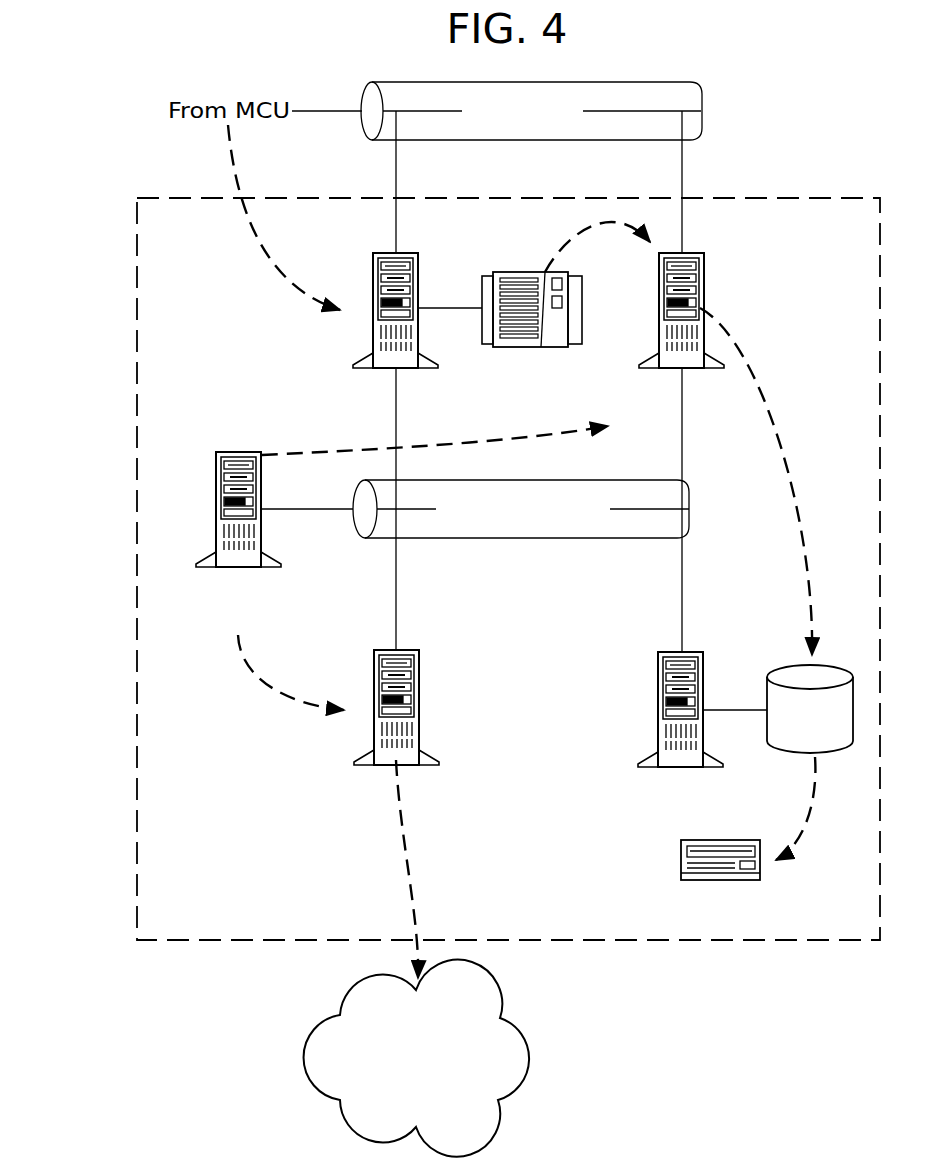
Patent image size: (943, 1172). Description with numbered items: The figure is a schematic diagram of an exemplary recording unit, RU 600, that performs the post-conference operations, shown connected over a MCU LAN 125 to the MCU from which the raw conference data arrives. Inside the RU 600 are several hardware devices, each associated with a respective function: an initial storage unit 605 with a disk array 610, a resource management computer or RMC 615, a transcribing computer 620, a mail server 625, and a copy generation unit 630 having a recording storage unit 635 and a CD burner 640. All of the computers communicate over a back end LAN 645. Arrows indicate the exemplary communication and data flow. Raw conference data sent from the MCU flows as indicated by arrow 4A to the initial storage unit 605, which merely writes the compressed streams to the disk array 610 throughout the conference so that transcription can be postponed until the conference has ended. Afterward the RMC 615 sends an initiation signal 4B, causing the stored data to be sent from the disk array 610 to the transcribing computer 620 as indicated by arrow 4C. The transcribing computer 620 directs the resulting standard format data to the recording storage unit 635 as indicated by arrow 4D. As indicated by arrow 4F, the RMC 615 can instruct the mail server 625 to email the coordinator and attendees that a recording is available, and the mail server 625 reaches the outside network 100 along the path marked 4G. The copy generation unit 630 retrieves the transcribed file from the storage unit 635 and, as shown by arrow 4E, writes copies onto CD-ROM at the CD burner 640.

The network 100 is at (394, 1087).
The MCU LAN 125 is at (703, 117).
The RU 600 is at (125, 265).
The initial storage unit 605 is at (372, 287).
The disk array 610 is at (512, 271).
The resource management computer 615 is at (215, 495).
The transcribing computer 620 is at (705, 285).
The mail server 625 is at (420, 681).
The copy generation unit 630 is at (657, 693).
The recording storage unit 635 is at (768, 686).
The CD burner 640 is at (680, 864).
The back end LAN 645 is at (689, 509).
The arrow 4A is at (282, 217).
The initiation signal 4B is at (435, 434).
The arrow 4C is at (597, 239).
The arrow 4D is at (764, 481).
The arrow 4E is at (814, 808).
The arrow 4F is at (287, 672).
The data flow from mail server to network 4G is at (428, 869).